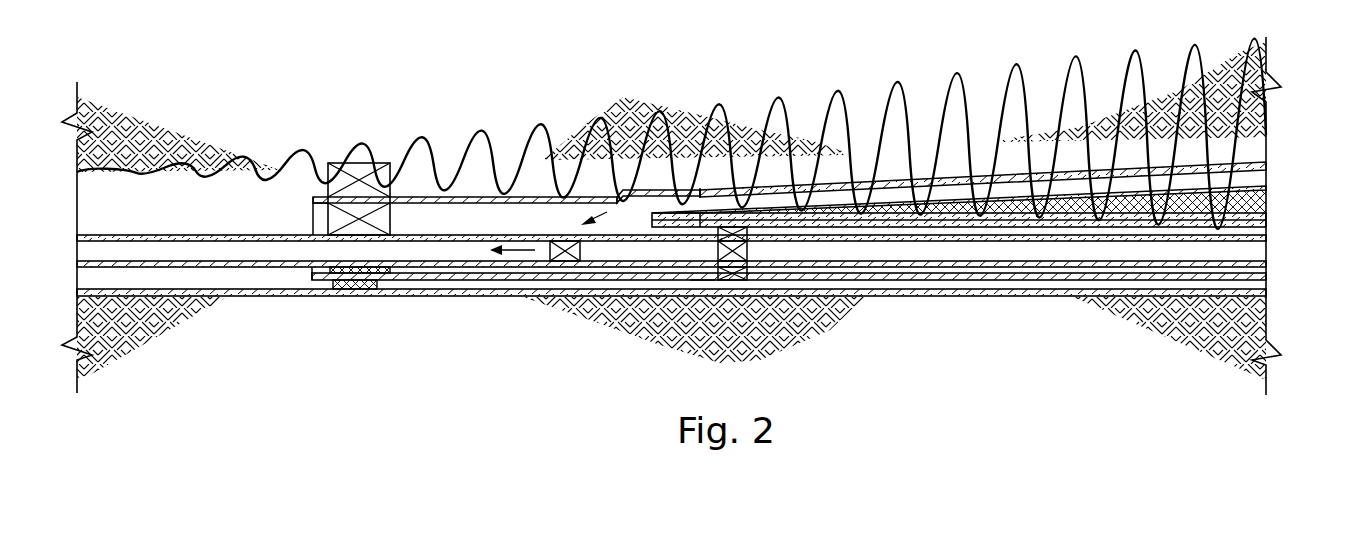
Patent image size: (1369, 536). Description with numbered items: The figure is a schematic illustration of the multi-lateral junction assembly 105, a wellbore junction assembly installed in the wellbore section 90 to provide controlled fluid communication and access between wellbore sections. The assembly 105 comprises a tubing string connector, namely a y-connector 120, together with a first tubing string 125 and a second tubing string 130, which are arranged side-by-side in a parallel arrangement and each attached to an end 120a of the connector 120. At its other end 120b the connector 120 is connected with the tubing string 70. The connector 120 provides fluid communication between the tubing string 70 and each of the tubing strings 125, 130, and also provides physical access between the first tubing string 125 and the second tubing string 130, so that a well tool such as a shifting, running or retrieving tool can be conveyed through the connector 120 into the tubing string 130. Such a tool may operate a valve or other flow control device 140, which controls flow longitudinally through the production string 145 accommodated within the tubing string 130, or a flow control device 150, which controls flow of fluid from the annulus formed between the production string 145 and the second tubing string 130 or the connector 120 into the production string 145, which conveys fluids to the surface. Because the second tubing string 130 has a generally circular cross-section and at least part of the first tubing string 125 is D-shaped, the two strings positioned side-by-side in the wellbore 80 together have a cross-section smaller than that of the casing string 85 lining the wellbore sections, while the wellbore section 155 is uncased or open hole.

The tubing string 70 is at (276, 272).
The wellbore 80 is at (290, 182).
The casing string 85 is at (1263, 190).
The wellbore section 90 is at (1028, 146).
The multi-lateral junction assembly 105 is at (482, 364).
The y-connector 120 is at (502, 194).
The end of the connector 120a is at (727, 188).
The end of the connector 120b is at (336, 136).
The first tubing string 125 is at (956, 165).
The second tubing string 130 is at (1268, 229).
The flow control device 140 is at (716, 250).
The production string 145 is at (1014, 268).
The flow control device 150 is at (568, 263).
The wellbore section 155 is at (826, 154).